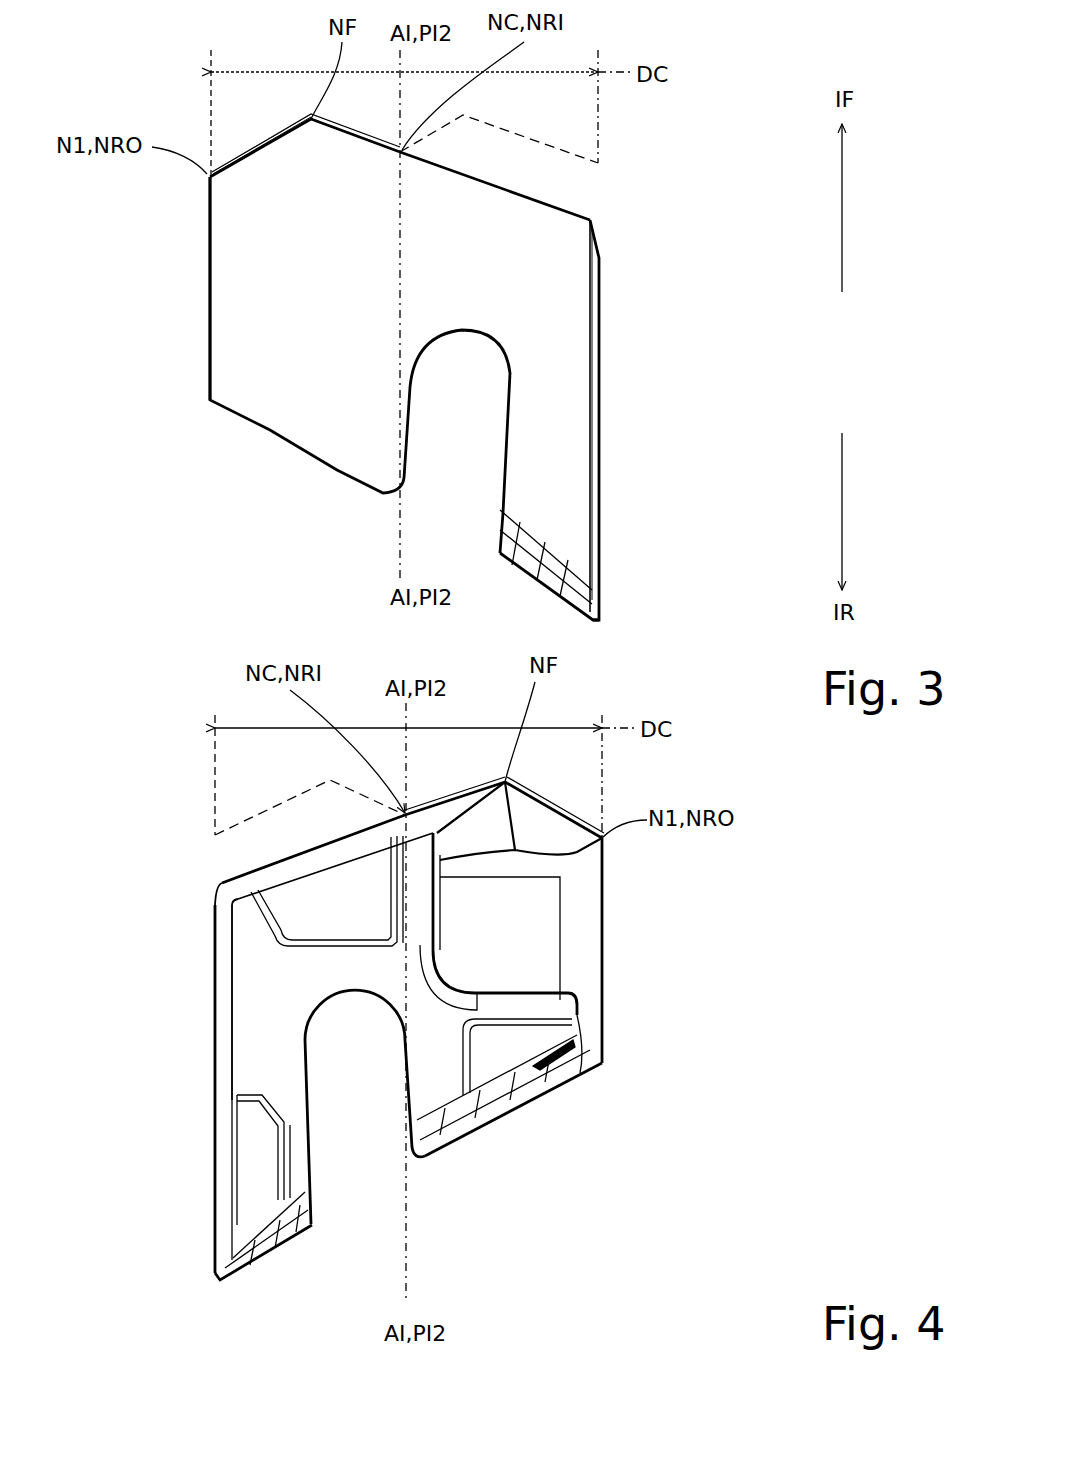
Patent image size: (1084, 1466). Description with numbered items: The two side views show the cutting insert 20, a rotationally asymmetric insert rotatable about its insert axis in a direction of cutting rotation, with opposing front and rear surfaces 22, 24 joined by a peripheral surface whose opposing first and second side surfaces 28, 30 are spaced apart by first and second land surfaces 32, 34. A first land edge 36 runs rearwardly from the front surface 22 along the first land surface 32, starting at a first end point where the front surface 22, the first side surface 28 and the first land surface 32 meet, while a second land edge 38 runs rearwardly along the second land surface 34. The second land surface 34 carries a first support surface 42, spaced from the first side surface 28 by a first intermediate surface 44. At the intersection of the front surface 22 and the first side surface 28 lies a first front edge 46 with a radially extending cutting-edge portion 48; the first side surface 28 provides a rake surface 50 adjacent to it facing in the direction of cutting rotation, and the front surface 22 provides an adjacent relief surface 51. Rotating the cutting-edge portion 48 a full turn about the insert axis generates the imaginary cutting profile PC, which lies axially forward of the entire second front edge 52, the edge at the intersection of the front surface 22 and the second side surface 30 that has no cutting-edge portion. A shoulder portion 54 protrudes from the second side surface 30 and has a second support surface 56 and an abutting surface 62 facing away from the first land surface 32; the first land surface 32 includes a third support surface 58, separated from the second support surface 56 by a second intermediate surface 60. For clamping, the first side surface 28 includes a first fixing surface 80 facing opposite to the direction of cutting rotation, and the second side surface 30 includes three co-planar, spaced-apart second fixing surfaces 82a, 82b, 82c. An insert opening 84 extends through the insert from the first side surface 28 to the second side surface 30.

In FIG. 3, the cutting insert 20 is at (649, 235).
In FIG. 4, the cutting insert 20 is at (637, 1068).
In FIG. 4, the front surface 22 is at (503, 802).
In FIG. 3, the rear surface 24 is at (338, 472).
In FIG. 4, the rear surface 24 is at (485, 1130).
In FIG. 3, the first side surface 28 is at (378, 231).
In FIG. 4, the second side surface 30 is at (301, 992).
In FIG. 3, the first land surface 32 is at (210, 347).
In FIG. 4, the first land surface 32 is at (607, 938).
In FIG. 3, the second land surface 34 is at (603, 328).
In FIG. 4, the second land surface 34 is at (228, 1090).
In FIG. 3, the first land edge 36 is at (210, 232).
In FIG. 4, the first land edge 36 is at (603, 905).
In FIG. 4, the second land edge 38 is at (222, 1175).
In FIG. 4, the first support surface 42 is at (226, 1022).
In FIG. 3, the first intermediate surface 44 is at (596, 378).
In FIG. 3, the first front edge 46 is at (520, 192).
In FIG. 4, the first front edge 46 is at (283, 860).
In FIG. 3, the cutting-edge portion 48 is at (260, 148).
In FIG. 4, the cutting-edge portion 48 is at (453, 807).
In FIG. 3, the rake surface 50 is at (318, 170).
In FIG. 4, the relief surface 51 is at (552, 818).
In FIG. 4, the second front edge 52 is at (302, 883).
In FIG. 4, the shoulder portion 54 is at (530, 963).
In FIG. 4, the second support surface 56 is at (513, 930).
In FIG. 3, the third support surface 58 is at (210, 277).
In FIG. 4, the second intermediate surface 60 is at (588, 963).
In FIG. 4, the abutting surface 62 is at (432, 912).
In FIG. 3, the first fixing surface 80 is at (531, 298).
In FIG. 4, the second fixing surface 82a is at (358, 912).
In FIG. 4, the second fixing surface 82b is at (527, 1059).
In FIG. 4, the second fixing surface 82c is at (283, 1169).
In FIG. 3, the insert opening 84 is at (480, 417).
In FIG. 4, the insert opening 84 is at (355, 1112).
In FIG. 3, the imaginary cutting profile PC is at (558, 147).
In FIG. 4, the imaginary cutting profile PC is at (567, 805).